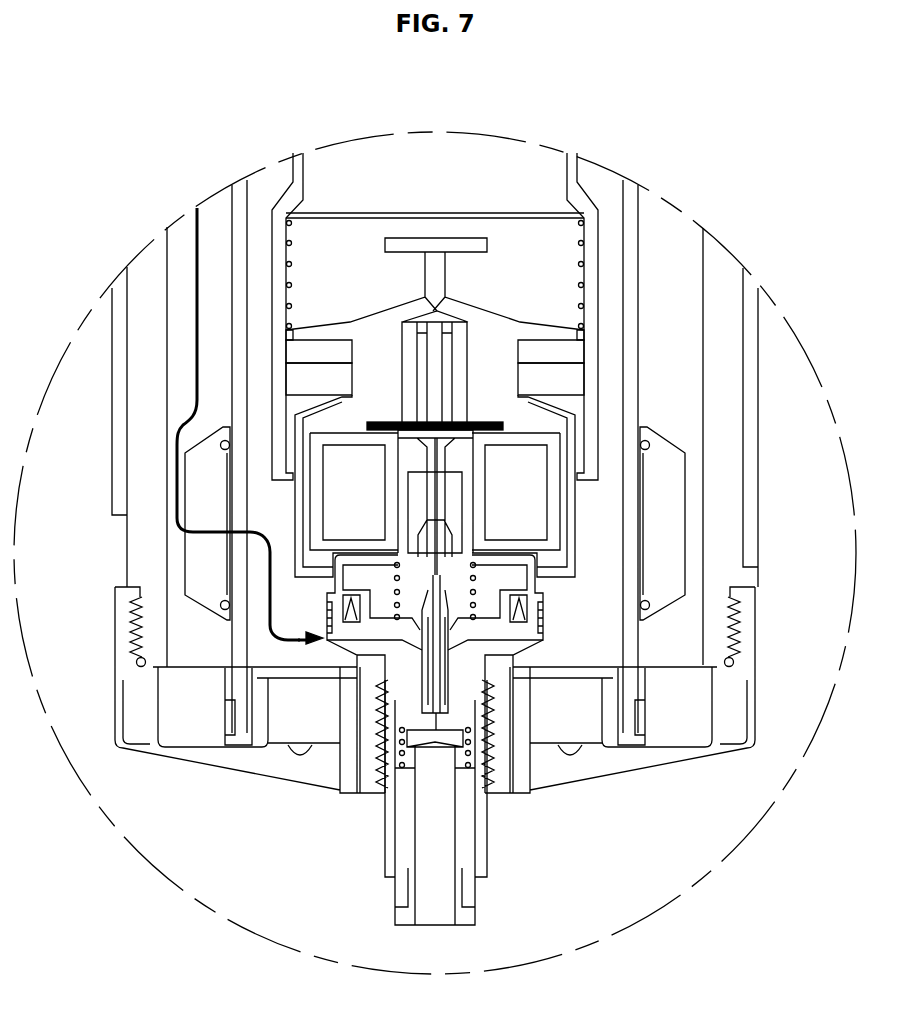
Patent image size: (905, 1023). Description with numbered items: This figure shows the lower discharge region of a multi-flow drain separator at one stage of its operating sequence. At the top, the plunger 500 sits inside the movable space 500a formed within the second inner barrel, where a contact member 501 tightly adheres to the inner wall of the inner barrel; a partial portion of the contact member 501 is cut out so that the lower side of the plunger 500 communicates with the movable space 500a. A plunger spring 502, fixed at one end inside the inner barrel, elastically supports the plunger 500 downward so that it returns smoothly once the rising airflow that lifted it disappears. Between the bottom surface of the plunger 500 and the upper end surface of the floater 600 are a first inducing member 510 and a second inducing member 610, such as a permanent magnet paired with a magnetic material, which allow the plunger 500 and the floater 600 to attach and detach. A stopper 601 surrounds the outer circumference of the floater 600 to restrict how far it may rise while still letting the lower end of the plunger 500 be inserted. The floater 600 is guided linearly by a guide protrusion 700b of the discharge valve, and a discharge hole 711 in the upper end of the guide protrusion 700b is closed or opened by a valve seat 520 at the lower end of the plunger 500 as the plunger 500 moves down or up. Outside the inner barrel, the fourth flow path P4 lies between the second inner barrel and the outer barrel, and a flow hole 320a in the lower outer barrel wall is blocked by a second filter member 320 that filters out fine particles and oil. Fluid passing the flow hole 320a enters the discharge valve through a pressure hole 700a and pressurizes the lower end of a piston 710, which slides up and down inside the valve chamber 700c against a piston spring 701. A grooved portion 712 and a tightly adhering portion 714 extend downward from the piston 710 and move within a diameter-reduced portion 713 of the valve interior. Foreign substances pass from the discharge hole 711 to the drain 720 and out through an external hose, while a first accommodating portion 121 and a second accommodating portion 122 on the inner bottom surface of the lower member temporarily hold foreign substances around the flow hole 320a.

The plunger 500 is at (520, 314).
The movable space 500a is at (364, 226).
The plunger spring 502 is at (291, 244).
The fourth flow path P4 is at (256, 266).
The contact member 501 is at (560, 327).
The discharge hole 711 is at (435, 437).
The first inducing member 510 is at (380, 420).
The stopper 601 is at (347, 397).
The second inducing member 610 is at (380, 434).
The valve seat 520 is at (560, 447).
The second filter member 320 is at (193, 472).
The flow hole 320a is at (235, 510).
The floater 600 is at (555, 495).
The guide protrusion 700b is at (465, 515).
The piston spring 701 is at (475, 578).
The valve chamber 700c is at (386, 586).
The first accommodating portion 121 is at (195, 738).
The pressure hole 700a is at (338, 643).
The second accommodating portion 122 is at (300, 748).
The grooved portion 712 is at (427, 660).
The tightly adhering portion 714 is at (433, 705).
The diameter-reduced portion 713 is at (462, 680).
The piston 710 is at (500, 623).
The drain 720 is at (487, 853).